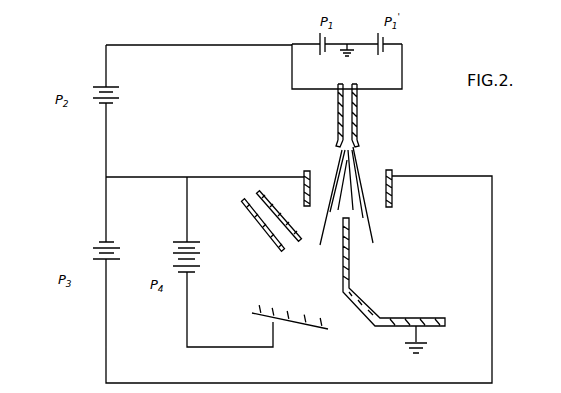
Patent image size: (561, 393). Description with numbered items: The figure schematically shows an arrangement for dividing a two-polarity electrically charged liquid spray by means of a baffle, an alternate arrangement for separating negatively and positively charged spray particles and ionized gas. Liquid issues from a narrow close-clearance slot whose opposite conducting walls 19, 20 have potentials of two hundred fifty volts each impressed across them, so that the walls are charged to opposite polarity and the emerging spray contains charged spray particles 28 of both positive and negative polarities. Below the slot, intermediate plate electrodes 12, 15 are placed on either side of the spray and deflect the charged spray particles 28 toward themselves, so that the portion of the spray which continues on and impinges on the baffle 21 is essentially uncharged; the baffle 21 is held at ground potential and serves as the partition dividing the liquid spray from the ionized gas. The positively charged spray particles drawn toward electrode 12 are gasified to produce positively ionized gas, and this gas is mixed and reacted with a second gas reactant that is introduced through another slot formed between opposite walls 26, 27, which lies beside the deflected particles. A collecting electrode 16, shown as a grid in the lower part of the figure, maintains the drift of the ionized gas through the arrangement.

The intermediate plate electrode 12 is at (305, 171).
The intermediate plate electrode 15 is at (392, 197).
The collecting electrode 16 is at (310, 330).
The conducting wall 19 is at (338, 121).
The conducting wall 20 is at (357, 120).
The baffle 21 is at (405, 318).
The slot wall 26 is at (300, 241).
The slot wall 27 is at (278, 247).
The charged spray particles 28 is at (358, 173).